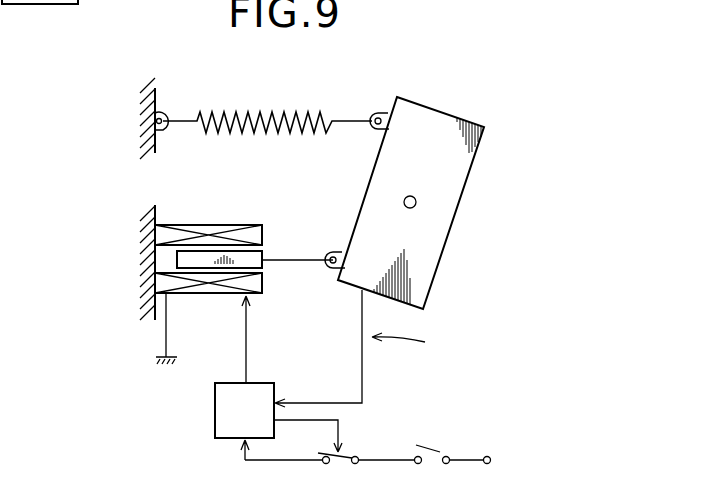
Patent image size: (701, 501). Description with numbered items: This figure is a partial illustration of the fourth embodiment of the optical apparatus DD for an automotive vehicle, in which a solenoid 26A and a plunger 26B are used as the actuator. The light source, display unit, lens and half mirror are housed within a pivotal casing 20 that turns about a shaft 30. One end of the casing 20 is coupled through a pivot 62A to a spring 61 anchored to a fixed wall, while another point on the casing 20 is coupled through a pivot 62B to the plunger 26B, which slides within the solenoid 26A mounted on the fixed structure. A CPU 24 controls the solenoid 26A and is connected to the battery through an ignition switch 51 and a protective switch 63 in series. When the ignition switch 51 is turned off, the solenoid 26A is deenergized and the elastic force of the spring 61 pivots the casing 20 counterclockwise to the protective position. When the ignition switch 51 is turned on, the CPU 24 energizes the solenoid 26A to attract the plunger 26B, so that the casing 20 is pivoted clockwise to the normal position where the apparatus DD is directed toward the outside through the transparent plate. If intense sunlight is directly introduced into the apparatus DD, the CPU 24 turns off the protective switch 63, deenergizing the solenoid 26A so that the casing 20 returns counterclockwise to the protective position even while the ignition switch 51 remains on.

The pivotal casing 20 is at (461, 118).
The shaft 30 is at (417, 202).
The spring 61 is at (298, 113).
The pivot pin 62A is at (375, 116).
The pivot pin 62B is at (330, 254).
The solenoid 26A is at (218, 225).
The plunger 26B is at (262, 264).
The CPU 24 is at (274, 392).
The protective switch 63 is at (343, 453).
The ignition switch 51 is at (437, 449).
The apparatus DD is at (456, 287).